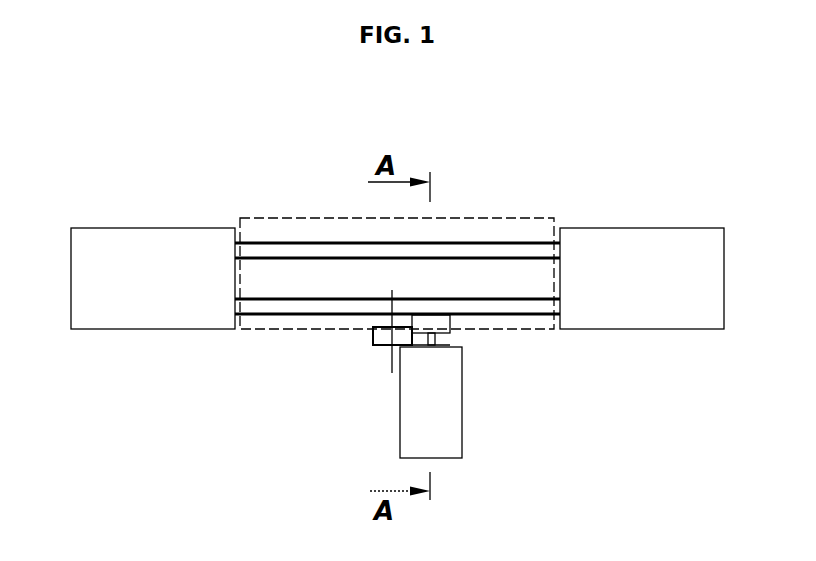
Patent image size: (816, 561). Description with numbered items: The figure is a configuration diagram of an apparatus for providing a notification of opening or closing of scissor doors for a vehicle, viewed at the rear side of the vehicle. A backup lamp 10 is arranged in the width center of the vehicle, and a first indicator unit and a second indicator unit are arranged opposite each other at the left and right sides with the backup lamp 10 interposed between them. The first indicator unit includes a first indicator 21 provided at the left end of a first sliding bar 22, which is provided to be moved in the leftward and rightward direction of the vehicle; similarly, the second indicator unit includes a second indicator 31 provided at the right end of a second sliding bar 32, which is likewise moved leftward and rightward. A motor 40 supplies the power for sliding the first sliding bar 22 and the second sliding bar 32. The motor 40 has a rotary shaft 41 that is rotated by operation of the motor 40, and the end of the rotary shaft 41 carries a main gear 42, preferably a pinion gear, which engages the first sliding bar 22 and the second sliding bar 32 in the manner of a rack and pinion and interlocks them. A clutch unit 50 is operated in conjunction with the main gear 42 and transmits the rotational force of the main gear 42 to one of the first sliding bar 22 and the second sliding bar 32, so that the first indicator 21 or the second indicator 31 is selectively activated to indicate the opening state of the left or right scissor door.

The backup lamp 10 is at (527, 217).
The first indicator 21 is at (125, 232).
The first sliding bar 22 is at (340, 313).
The second indicator 31 is at (678, 329).
The second sliding bar 32 is at (517, 298).
The motor 40 is at (412, 416).
The rotary shaft 41 is at (435, 340).
The main gear 42 is at (450, 323).
The clutch unit 50 is at (373, 340).